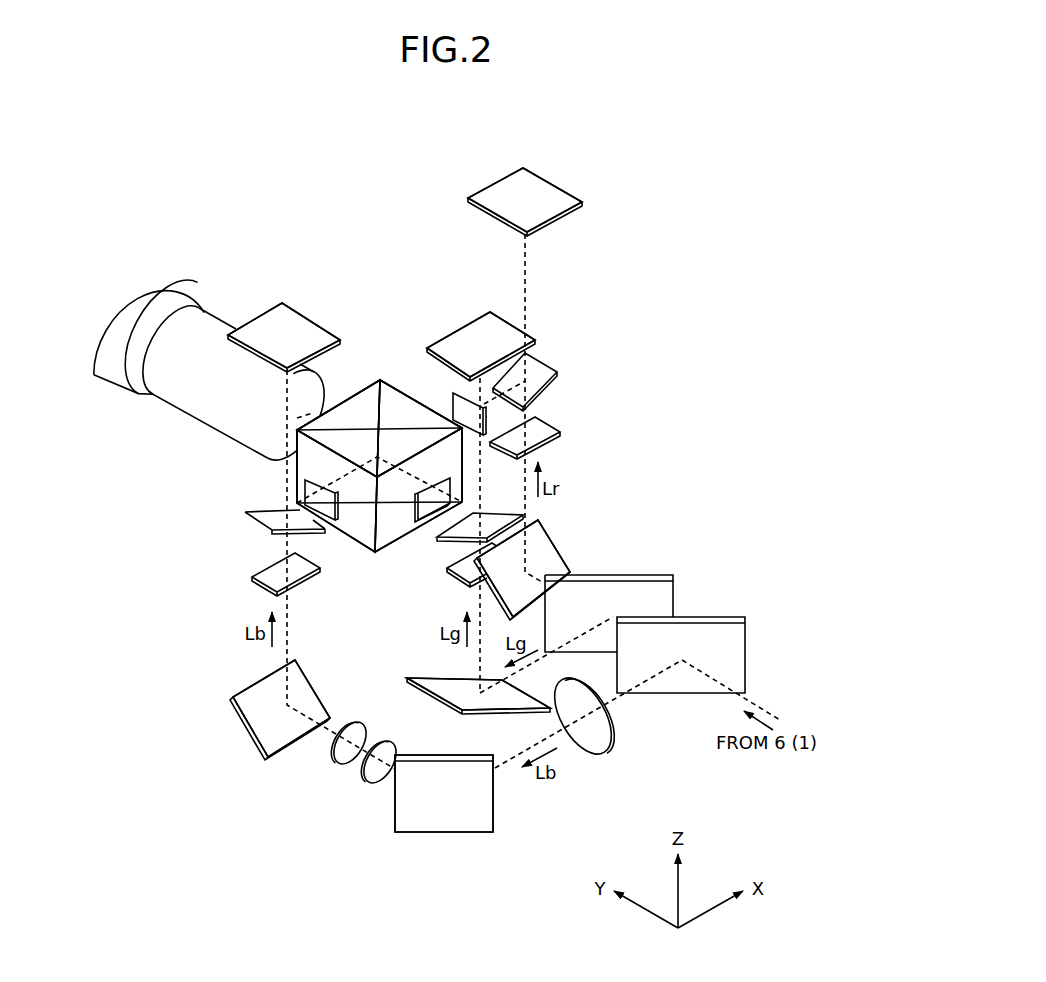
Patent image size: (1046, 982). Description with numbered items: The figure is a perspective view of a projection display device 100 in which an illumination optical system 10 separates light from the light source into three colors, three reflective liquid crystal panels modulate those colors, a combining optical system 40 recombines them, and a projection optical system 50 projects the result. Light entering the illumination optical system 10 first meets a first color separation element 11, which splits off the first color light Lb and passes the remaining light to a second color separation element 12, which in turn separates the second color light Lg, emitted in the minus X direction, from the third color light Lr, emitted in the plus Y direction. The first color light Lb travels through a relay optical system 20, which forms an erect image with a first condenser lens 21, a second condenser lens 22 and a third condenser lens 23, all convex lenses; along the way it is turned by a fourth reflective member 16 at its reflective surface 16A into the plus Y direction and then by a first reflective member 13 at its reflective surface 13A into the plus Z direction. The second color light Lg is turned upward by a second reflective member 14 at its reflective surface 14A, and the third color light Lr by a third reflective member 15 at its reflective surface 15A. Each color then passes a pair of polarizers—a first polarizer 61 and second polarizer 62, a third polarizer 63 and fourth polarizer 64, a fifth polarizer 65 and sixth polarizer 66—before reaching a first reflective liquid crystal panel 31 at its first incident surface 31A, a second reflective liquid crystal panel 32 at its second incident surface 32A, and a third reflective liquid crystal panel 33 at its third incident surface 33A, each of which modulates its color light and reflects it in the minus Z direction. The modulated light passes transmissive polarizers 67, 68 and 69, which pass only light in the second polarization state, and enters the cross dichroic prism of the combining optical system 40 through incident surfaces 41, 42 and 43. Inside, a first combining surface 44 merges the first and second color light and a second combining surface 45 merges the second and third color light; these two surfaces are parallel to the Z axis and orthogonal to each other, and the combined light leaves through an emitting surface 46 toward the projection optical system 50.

The projection display device 100 is at (673, 206).
The illumination optical system 10 is at (687, 498).
The first color separation element 11 is at (715, 616).
The second color separation element 12 is at (631, 573).
The first reflective member 13 is at (256, 683).
The reflective surface 13A is at (262, 718).
The second reflective member 14 is at (409, 677).
The reflective surface 14A is at (474, 702).
The third reflective member 15 is at (567, 553).
The reflective surface 15A is at (542, 540).
The fourth reflective member 16 is at (493, 802).
The reflective surface 16A is at (425, 754).
The relay optical system 20 is at (348, 748).
The first condenser lens 21 is at (592, 753).
The second condenser lens 22 is at (383, 733).
The third condenser lens 23 is at (343, 720).
The first reflective liquid crystal panel 31 is at (318, 310).
The first incident surface 31A is at (333, 355).
The second reflective liquid crystal panel 32 is at (510, 310).
The second incident surface 32A is at (426, 364).
The third reflective liquid crystal panel 33 is at (553, 185).
The third incident surface 33A is at (560, 230).
The combining optical system 40 is at (379, 447).
The incident surface 41 is at (358, 543).
The incident surface 42 is at (395, 543).
The incident surface 43 is at (450, 416).
The first combining surface 44 is at (384, 412).
The second combining surface 45 is at (375, 433).
The emitting surface 46 is at (363, 400).
The projection optical system 50 is at (191, 276).
The first polarizer 61 is at (250, 574).
The second polarizer 62 is at (244, 511).
The third polarizer 63 is at (468, 586).
The fourth polarizer 64 is at (488, 511).
The fifth polarizer 65 is at (558, 431).
The sixth polarizer 66 is at (538, 363).
The transmissive polarizer 67 is at (318, 479).
The transmissive polarizer 68 is at (421, 498).
The transmissive polarizer 69 is at (472, 437).